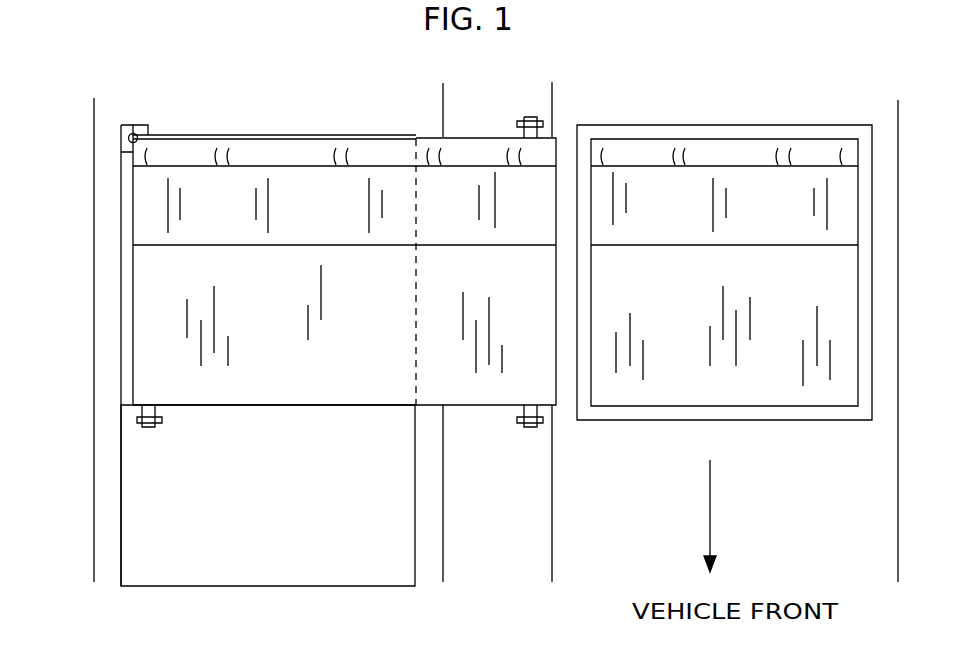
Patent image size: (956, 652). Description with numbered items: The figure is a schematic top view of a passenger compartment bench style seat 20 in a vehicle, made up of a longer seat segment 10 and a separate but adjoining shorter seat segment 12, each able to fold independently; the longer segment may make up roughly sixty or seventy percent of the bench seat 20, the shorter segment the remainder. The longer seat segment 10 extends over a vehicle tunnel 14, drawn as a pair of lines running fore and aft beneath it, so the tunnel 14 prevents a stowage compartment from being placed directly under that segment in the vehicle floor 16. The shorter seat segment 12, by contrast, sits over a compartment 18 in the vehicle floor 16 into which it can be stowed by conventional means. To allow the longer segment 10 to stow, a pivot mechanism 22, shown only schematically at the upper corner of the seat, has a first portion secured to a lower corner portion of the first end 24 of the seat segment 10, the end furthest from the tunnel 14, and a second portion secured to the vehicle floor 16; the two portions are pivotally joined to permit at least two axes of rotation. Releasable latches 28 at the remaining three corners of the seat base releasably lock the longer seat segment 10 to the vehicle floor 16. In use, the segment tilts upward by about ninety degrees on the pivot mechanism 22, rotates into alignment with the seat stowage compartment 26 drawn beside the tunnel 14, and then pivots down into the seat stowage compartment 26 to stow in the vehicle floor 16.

The longer seat segment 10 is at (375, 374).
The shorter seat segment 12 is at (697, 308).
The vehicle tunnel 14 is at (513, 124).
The vehicle floor 16 is at (289, 633).
The compartment 18 is at (802, 413).
The bench style seat 20 is at (289, 156).
The pivot mechanism 22 is at (137, 128).
The first end 24 is at (133, 268).
The seat stowage compartment 26 is at (282, 517).
The releasable latches 28 is at (532, 117).